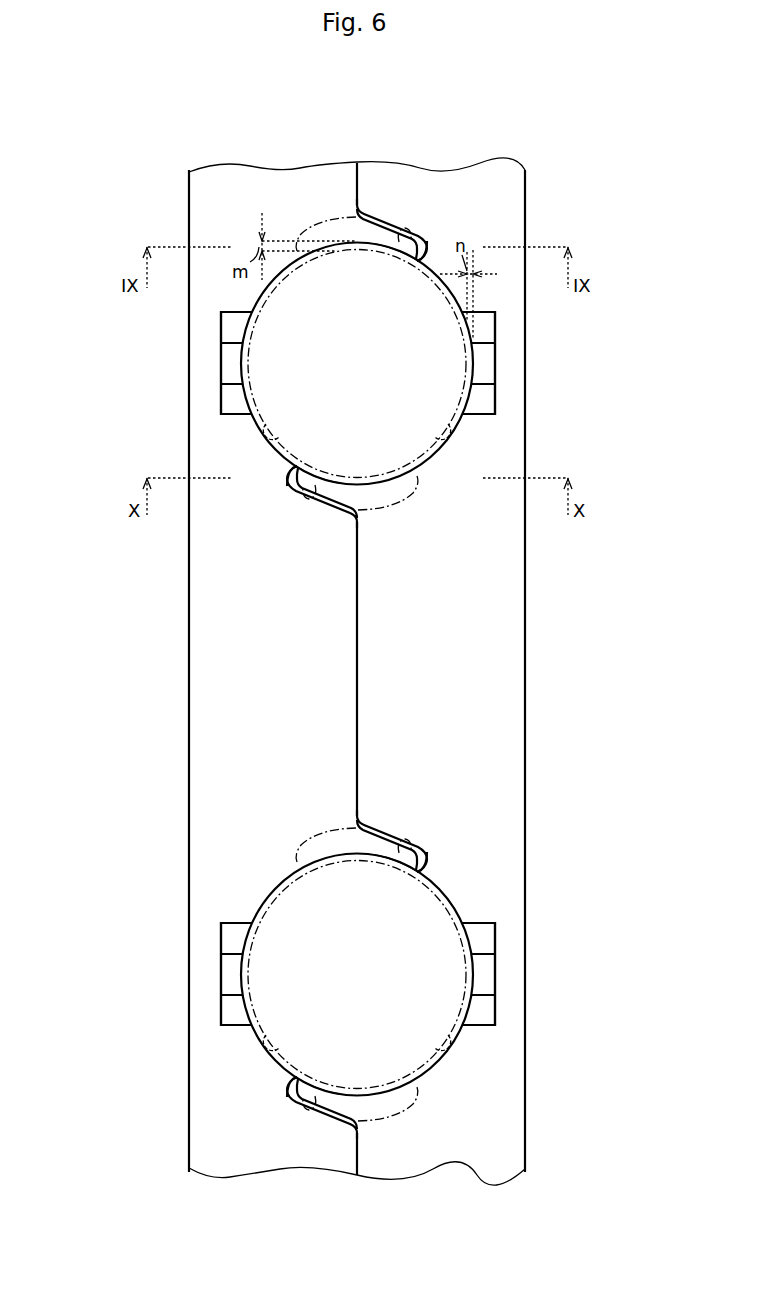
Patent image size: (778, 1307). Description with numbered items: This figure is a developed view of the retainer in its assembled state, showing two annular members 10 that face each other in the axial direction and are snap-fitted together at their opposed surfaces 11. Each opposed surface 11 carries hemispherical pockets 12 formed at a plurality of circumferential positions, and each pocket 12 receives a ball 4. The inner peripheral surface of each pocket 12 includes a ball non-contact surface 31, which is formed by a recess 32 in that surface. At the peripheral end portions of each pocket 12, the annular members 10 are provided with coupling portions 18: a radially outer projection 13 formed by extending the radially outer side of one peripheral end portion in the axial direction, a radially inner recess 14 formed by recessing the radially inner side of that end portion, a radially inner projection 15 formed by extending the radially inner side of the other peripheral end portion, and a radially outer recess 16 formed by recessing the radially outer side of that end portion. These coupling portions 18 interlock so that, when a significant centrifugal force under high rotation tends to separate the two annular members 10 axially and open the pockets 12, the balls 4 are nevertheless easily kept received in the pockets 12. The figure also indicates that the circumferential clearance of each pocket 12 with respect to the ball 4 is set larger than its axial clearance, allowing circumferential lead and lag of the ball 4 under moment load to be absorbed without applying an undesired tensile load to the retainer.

The ball 4 is at (232, 325).
The annular member 10 is at (175, 862).
The opposed surface 11 is at (357, 724).
The pocket 12 is at (257, 418).
The radially outer projection 13 is at (391, 242).
The radially inner recess 14 is at (332, 223).
The radially inner projection 15 is at (390, 212).
The radially outer recess 16 is at (425, 232).
The coupling portion 18 is at (366, 264).
The ball non-contact surface 31 is at (483, 330).
The recess 32 is at (478, 668).